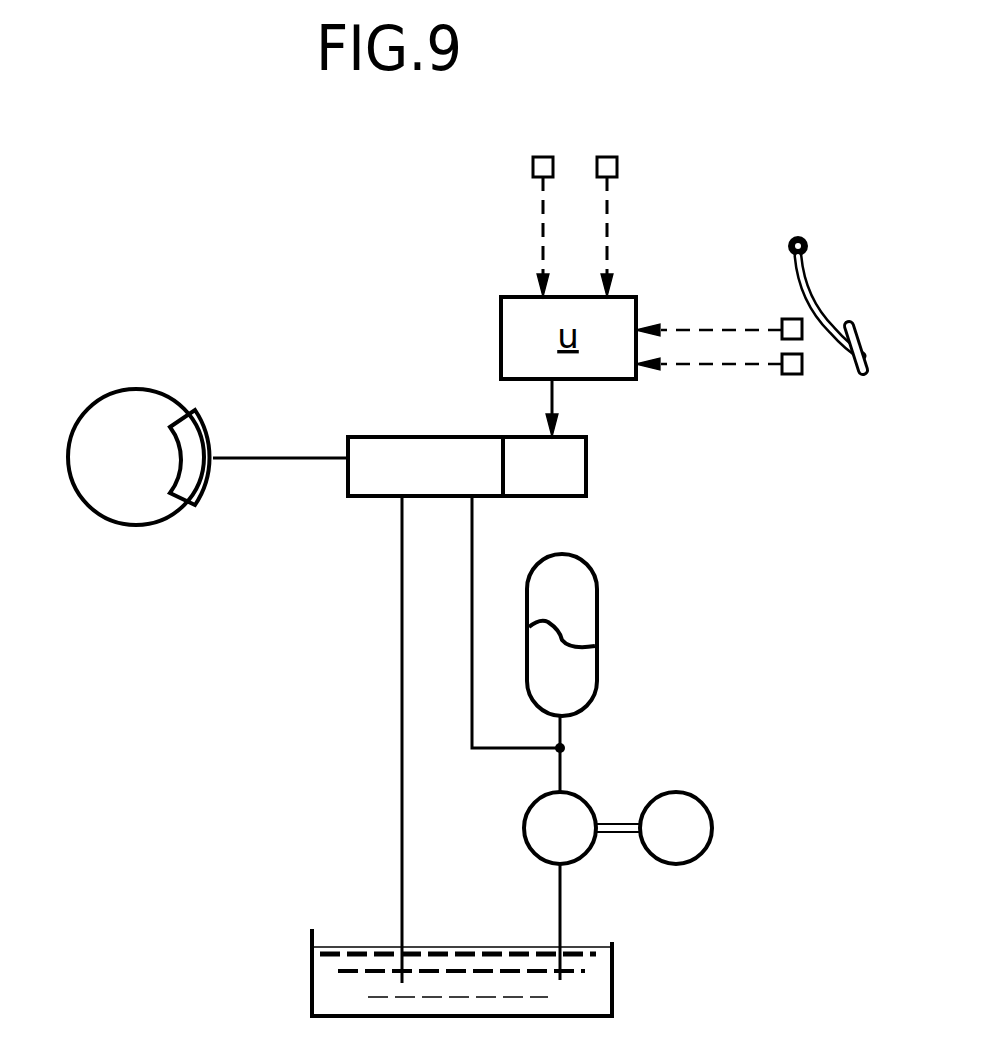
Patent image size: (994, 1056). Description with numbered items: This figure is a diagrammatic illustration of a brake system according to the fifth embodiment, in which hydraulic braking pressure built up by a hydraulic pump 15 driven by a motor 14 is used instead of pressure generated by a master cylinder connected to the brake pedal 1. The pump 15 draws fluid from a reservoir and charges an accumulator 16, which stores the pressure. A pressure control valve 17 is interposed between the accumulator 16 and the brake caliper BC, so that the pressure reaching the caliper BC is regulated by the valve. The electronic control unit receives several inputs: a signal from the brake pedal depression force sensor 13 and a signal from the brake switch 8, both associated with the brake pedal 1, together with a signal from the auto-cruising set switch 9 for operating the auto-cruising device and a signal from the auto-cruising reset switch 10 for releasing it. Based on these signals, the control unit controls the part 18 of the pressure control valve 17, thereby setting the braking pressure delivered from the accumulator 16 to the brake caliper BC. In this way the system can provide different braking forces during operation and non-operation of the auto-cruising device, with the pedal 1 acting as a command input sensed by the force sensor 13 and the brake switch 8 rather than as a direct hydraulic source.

The brake pedal 1 is at (860, 332).
The brake switch 8 is at (790, 329).
The auto-cruising set switch 9 is at (541, 163).
The auto-cruising reset switch 10 is at (611, 162).
The brake pedal depression force sensor 13 is at (795, 373).
The motor 14 is at (700, 797).
The hydraulic pump 15 is at (588, 801).
The accumulator 16 is at (598, 595).
The pressure control valve 17 is at (427, 452).
The actuator of pressure control valve 18 is at (570, 468).
The brake caliper BC is at (195, 430).